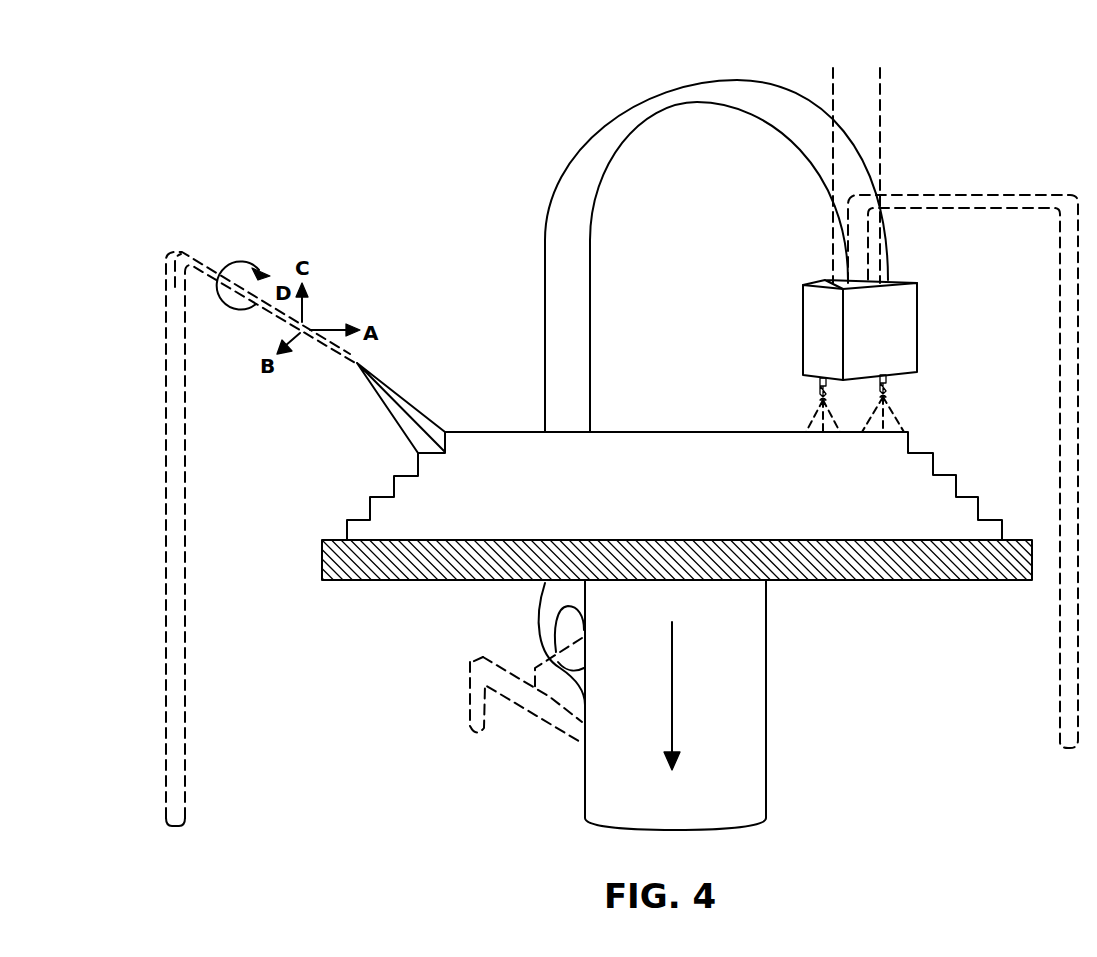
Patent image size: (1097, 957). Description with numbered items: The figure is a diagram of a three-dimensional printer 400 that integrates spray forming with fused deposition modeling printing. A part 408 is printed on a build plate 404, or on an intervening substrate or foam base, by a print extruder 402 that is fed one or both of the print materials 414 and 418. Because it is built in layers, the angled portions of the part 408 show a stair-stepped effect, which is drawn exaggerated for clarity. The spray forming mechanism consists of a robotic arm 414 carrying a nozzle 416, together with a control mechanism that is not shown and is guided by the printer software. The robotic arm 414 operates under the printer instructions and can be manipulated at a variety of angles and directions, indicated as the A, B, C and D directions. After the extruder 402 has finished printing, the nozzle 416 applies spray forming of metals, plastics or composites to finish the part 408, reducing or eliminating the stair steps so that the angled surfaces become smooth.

The 3-D printer 400 is at (147, 138).
The print extruder 402 is at (917, 325).
The build plate 404 is at (362, 582).
The part 408 is at (690, 430).
The robotic arm 414 is at (220, 272).
The nozzle 416 is at (355, 367).
The print material 418 is at (880, 68).